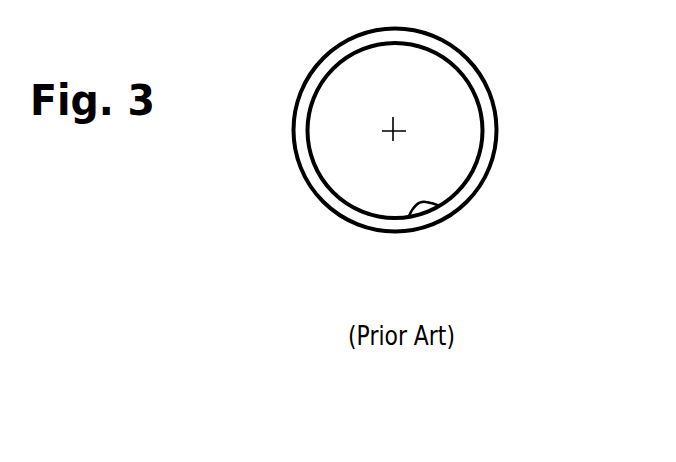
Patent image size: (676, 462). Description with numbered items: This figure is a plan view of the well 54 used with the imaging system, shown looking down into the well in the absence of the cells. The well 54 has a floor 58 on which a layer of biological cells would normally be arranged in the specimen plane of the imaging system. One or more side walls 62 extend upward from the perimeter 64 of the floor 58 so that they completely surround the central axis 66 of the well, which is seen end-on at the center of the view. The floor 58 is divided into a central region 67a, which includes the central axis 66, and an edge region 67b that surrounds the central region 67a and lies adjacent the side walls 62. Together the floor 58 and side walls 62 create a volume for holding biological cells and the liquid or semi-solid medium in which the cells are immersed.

The floor 58 is at (411, 99).
The well 54 is at (330, 78).
The central axis 66 is at (395, 134).
The central region 67a is at (393, 160).
The edge region 67b is at (467, 121).
The perimeter 64 is at (466, 171).
The side wall 62 is at (416, 212).